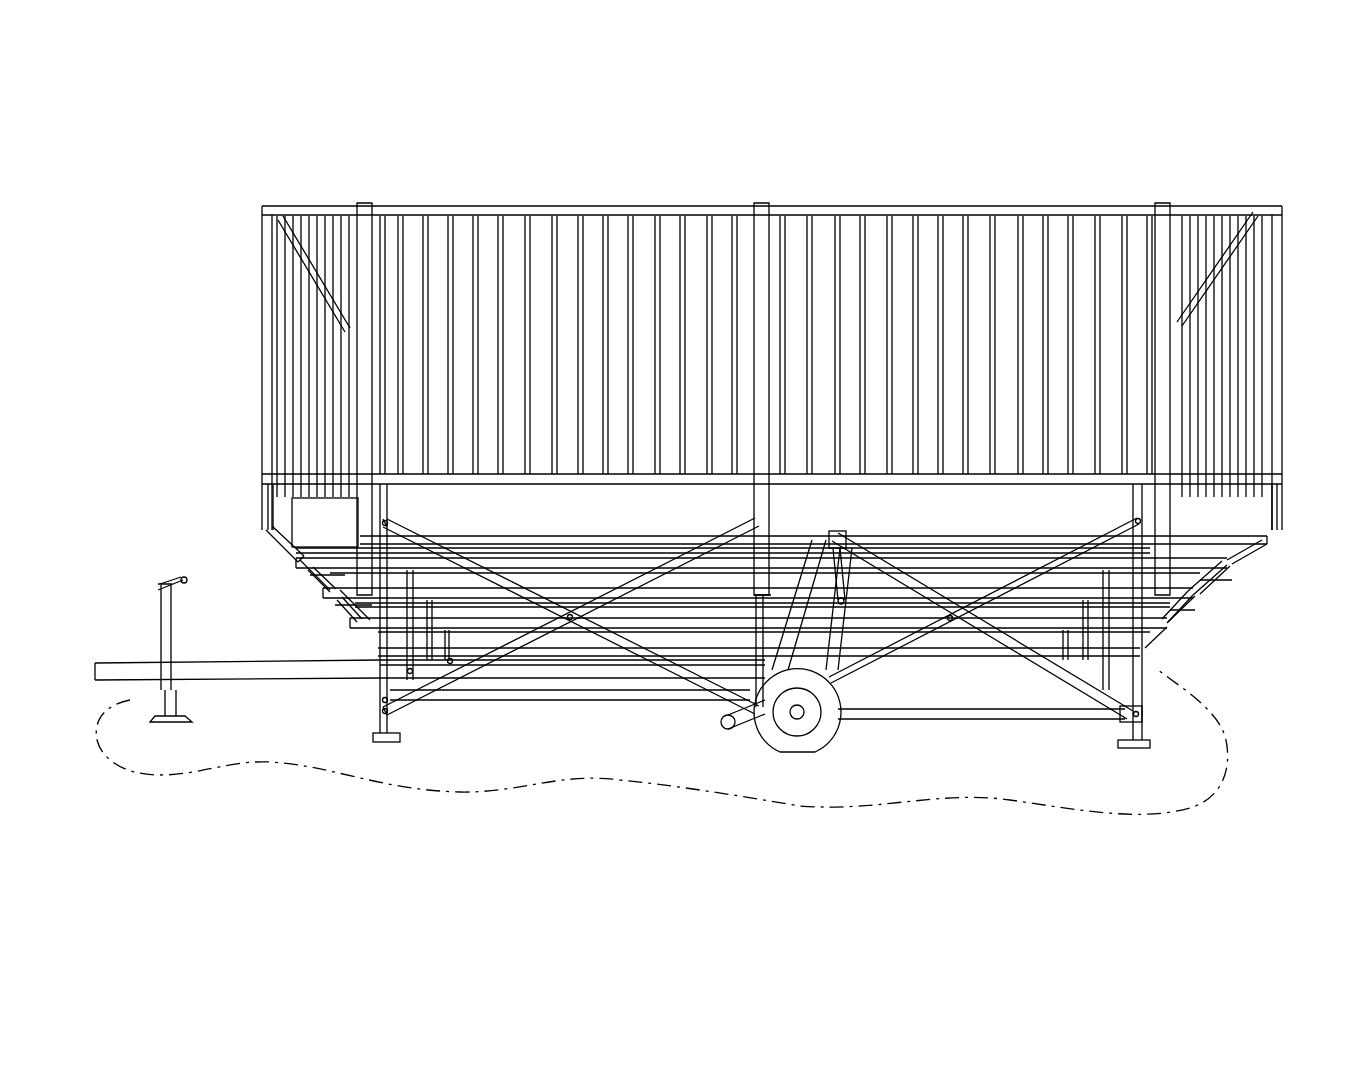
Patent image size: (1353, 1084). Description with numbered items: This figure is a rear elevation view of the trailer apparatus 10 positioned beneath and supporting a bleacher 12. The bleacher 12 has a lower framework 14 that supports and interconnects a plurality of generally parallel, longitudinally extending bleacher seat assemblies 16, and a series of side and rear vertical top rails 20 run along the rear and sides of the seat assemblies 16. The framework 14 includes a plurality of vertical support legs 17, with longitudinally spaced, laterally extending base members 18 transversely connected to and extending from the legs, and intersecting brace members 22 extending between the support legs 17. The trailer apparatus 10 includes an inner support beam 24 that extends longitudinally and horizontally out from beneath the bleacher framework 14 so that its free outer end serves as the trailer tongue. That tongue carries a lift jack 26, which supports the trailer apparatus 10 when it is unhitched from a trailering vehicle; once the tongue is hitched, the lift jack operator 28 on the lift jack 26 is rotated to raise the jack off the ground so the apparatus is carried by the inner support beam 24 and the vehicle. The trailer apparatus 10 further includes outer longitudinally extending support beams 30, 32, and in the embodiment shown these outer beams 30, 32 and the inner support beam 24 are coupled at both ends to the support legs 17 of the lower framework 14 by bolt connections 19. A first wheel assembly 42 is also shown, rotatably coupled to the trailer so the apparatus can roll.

The trailer apparatus 10 is at (178, 425).
The bleacher 12 is at (845, 150).
The lower framework 14 is at (1270, 597).
The bleacher seat assemblies 16 is at (569, 590).
The vertical support legs 17 is at (380, 650).
The base members 18 is at (390, 742).
The bolt connections 19 is at (383, 700).
The vertical top rails 20 is at (400, 205).
The brace members 22 is at (422, 534).
The inner support beam 24 is at (287, 672).
The lift jack 26 is at (172, 685).
The lift jack operator 28 is at (183, 578).
The outer longitudinally extending support beam 30 is at (585, 660).
The outer longitudinally extending support beam 32 is at (543, 695).
The first wheel assembly 42 is at (822, 735).